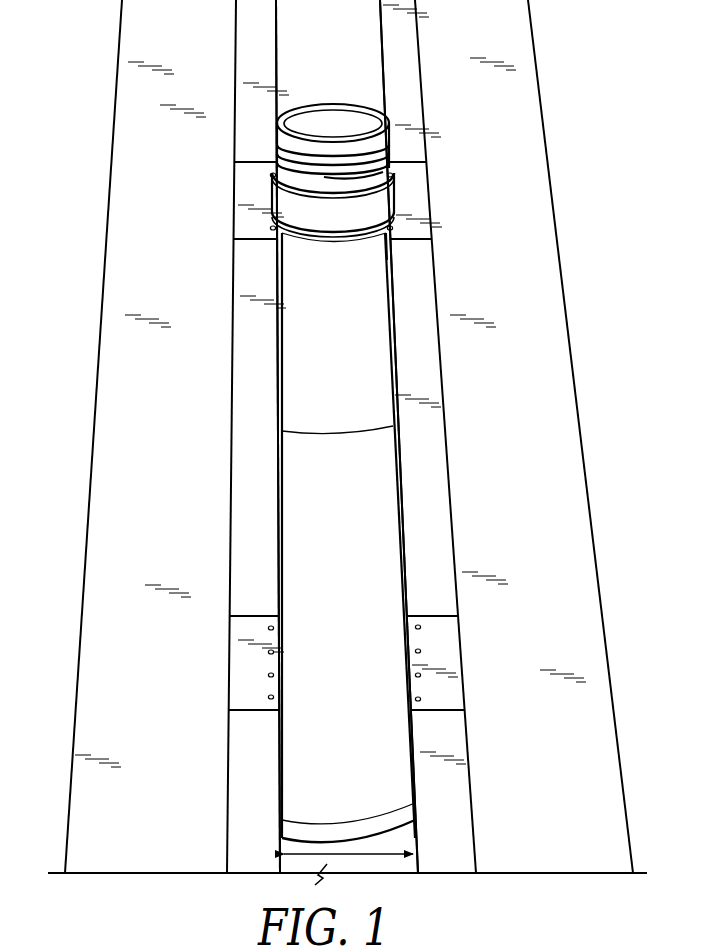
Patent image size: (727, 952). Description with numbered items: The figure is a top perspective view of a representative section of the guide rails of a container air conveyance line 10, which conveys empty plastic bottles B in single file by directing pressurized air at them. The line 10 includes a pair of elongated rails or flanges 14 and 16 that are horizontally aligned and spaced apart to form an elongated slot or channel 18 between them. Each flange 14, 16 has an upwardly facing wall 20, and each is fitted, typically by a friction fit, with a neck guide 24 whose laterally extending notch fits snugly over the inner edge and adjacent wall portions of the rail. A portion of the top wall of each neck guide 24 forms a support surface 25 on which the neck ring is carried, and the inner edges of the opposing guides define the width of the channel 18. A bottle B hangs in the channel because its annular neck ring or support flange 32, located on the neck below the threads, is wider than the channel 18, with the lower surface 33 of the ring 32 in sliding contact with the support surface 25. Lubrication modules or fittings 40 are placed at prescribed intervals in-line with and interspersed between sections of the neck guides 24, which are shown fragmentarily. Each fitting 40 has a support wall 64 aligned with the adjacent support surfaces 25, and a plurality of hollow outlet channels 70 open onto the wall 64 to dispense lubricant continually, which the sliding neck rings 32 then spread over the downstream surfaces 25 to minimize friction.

The air conveyance line 10 is at (608, 63).
The rail or flange 14 is at (106, 699).
The rail or flange 16 is at (538, 777).
The slot or channel 18 is at (391, 857).
The upwardly facing wall 20 is at (108, 625).
The neck guide 24 is at (241, 72).
The support surface 25 is at (277, 485).
The neck ring or support flange 32 is at (290, 166).
The lower surface of support flange 33 is at (352, 233).
The lubrication module or fitting 40 is at (244, 209).
The support wall 64 is at (247, 230).
The outlet channel 70 is at (271, 173).
The bottle B is at (331, 502).